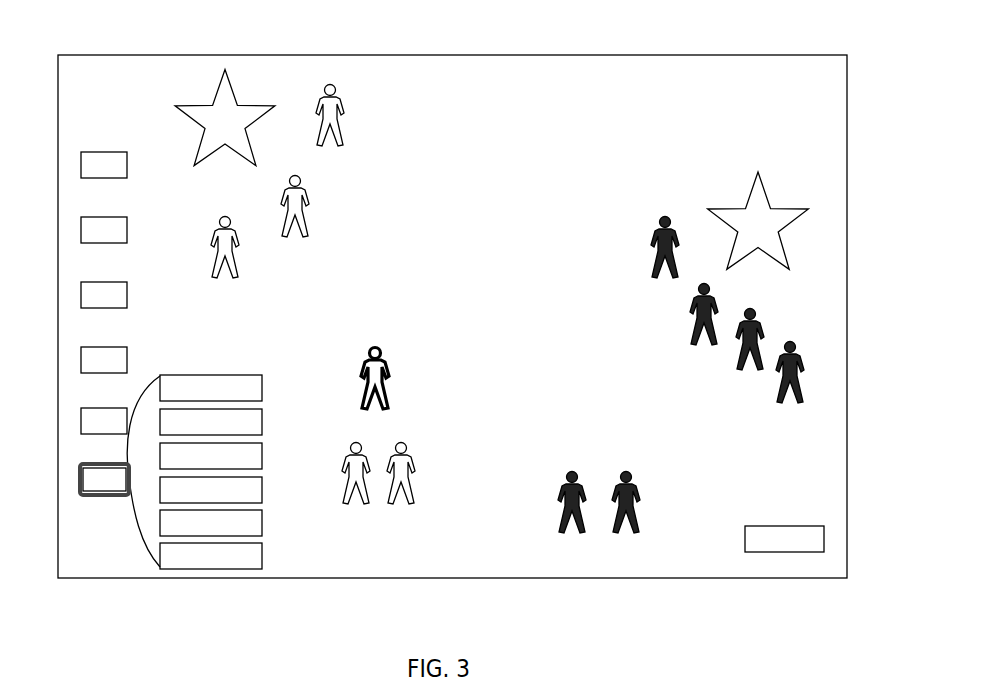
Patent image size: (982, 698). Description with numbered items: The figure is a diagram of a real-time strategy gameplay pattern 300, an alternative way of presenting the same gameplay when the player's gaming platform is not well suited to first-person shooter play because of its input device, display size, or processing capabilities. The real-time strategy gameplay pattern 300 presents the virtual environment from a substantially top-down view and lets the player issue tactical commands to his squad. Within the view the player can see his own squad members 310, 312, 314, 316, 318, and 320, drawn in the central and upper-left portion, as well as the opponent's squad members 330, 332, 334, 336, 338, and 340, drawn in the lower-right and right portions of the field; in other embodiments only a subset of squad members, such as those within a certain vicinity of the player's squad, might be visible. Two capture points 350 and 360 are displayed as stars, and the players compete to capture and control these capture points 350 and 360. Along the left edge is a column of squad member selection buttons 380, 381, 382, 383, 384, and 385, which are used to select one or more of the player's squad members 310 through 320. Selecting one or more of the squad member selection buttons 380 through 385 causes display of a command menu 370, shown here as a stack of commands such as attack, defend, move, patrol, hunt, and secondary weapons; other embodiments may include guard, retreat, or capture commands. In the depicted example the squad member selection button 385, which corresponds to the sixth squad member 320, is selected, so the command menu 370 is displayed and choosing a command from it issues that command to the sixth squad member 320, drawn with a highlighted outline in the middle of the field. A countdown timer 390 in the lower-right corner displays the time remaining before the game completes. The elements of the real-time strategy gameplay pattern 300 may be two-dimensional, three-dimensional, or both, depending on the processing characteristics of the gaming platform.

The real-time strategy gameplay pattern 300 is at (453, 56).
The squad member 310 is at (330, 128).
The squad member 312 is at (296, 219).
The squad member 314 is at (226, 260).
The squad member 316 is at (357, 487).
The squad member 318 is at (402, 487).
The sixth squad member 320 is at (375, 392).
The opponent's squad member 330 is at (573, 515).
The opponent's squad member 332 is at (626, 515).
The opponent's squad member 334 is at (790, 385).
The opponent's squad member 336 is at (750, 352).
The opponent's squad member 338 is at (705, 327).
The opponent's squad member 340 is at (664, 260).
The capture point 350 is at (223, 70).
The capture point 360 is at (757, 174).
The command menu 370 is at (225, 374).
The squad member selection button 380 is at (80, 168).
The squad member selection button 381 is at (80, 232).
The squad member selection button 382 is at (80, 299).
The squad member selection button 383 is at (80, 363).
The squad member selection button 384 is at (80, 426).
The squad member selection button 385 is at (79, 486).
The countdown timer 390 is at (790, 552).